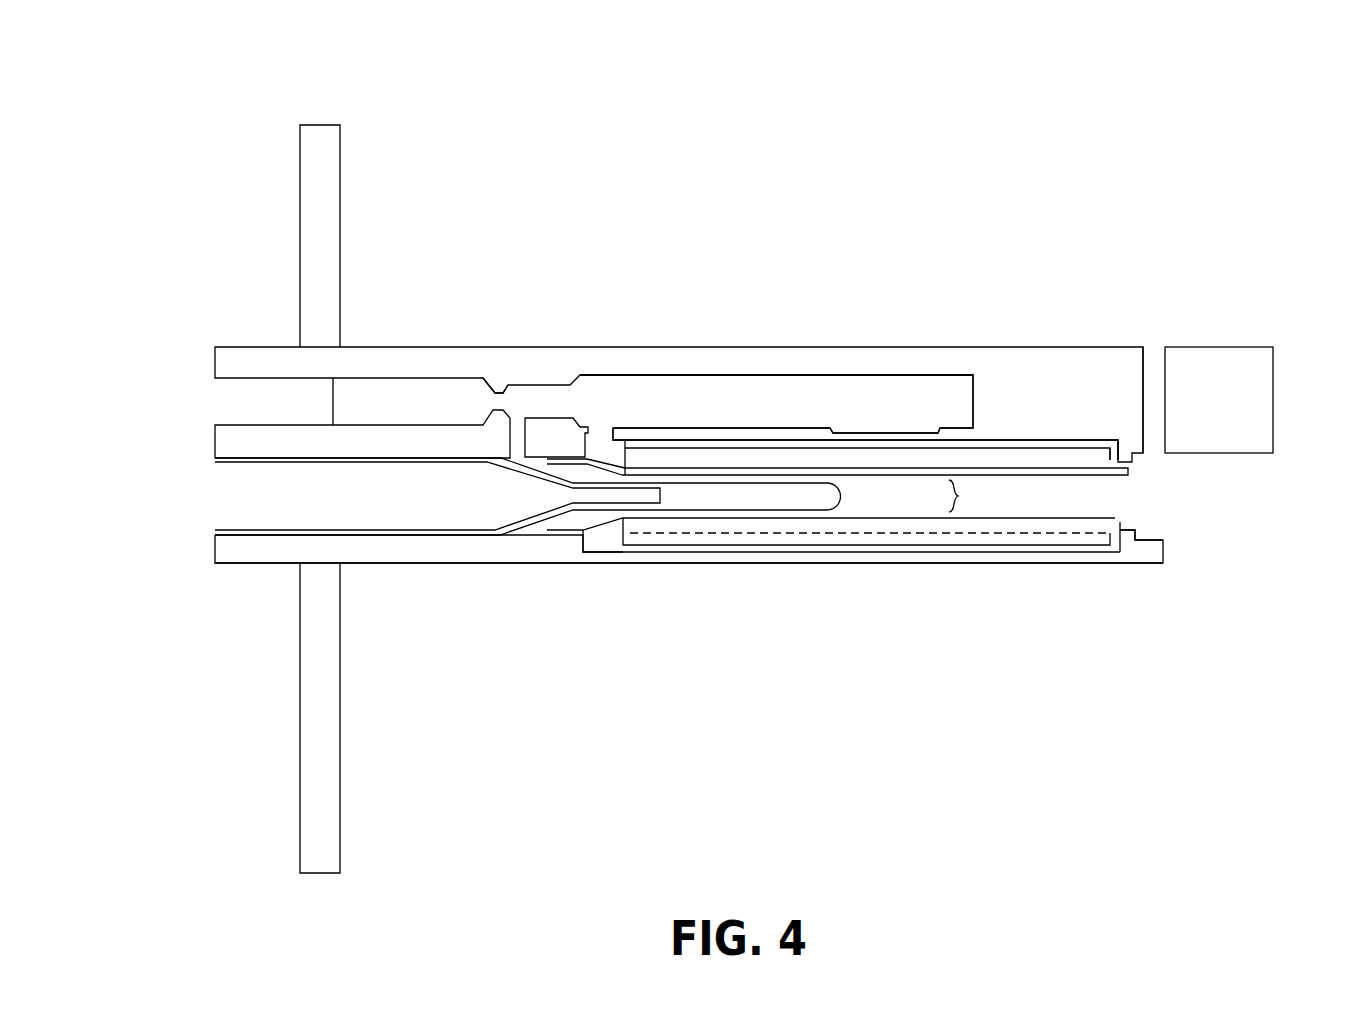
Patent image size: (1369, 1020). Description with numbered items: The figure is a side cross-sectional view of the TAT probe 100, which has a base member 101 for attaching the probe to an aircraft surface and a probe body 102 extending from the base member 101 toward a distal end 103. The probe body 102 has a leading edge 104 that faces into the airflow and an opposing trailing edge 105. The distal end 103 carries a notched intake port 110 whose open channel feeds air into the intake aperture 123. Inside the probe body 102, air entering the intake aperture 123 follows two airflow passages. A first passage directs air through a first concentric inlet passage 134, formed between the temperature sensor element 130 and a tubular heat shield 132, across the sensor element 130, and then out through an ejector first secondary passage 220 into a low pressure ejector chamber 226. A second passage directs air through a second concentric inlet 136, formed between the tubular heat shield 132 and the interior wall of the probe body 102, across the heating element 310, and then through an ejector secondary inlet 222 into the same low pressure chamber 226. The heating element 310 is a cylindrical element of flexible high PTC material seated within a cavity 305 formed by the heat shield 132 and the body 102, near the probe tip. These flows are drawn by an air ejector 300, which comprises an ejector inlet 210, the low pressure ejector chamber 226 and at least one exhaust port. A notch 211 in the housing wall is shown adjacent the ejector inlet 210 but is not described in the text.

The TAT probe 100 is at (1113, 112).
The base member 101 is at (300, 190).
The probe body 102 is at (472, 347).
The distal end 103 is at (1200, 330).
The leading edge 104 is at (845, 563).
The trailing edge 105 is at (880, 347).
The notched intake port 110 is at (1262, 510).
The intake aperture 123 is at (1212, 518).
The temperature sensor element 130 is at (768, 506).
The tubular heat shield 132 is at (972, 496).
The first concentric inlet passage 134 is at (1045, 493).
The second concentric inlet 136 is at (1116, 462).
The ejector inlet 210 is at (230, 400).
The notch 211 is at (503, 372).
The ejector first secondary passage 220 is at (522, 420).
The ejector secondary inlet 222 is at (603, 427).
The low pressure ejector chamber 226 is at (735, 392).
The air ejector 300 is at (650, 322).
The cavity 305 is at (1118, 548).
The heating element 310 is at (600, 538).